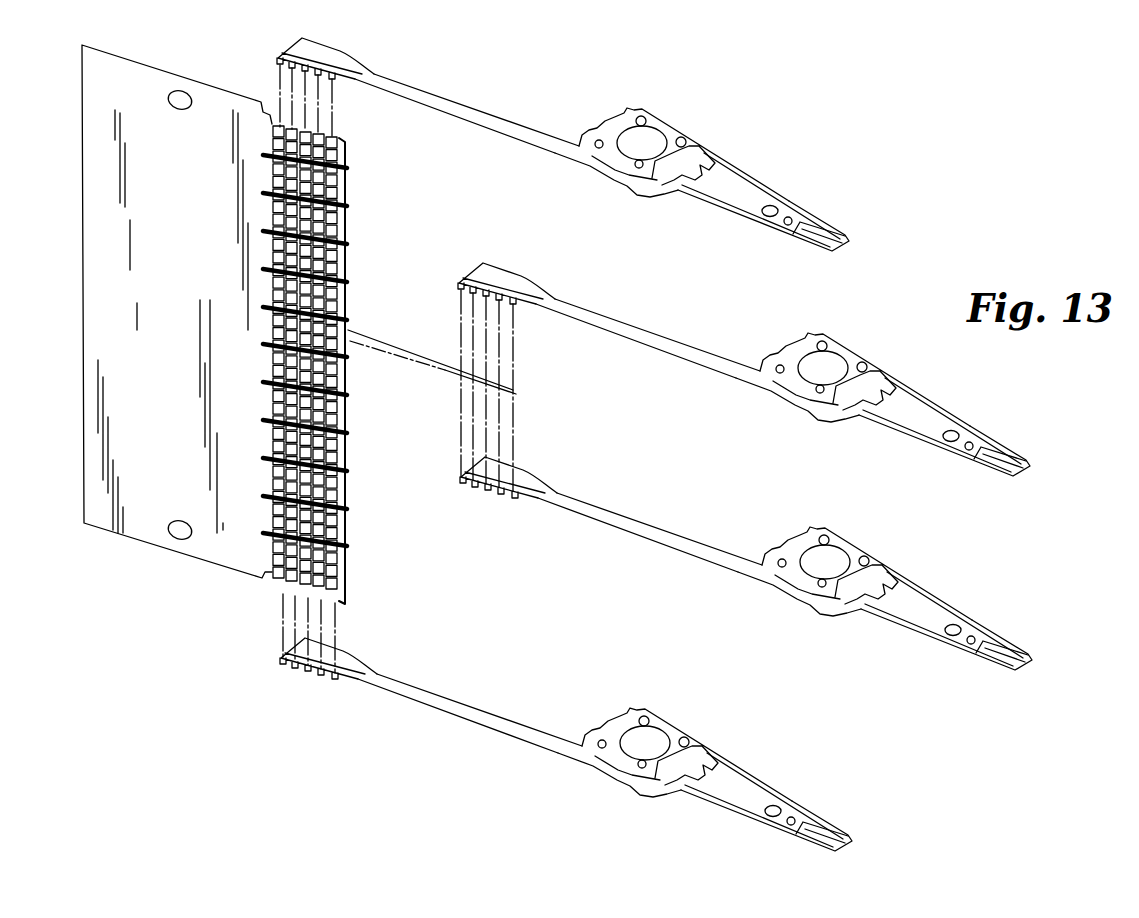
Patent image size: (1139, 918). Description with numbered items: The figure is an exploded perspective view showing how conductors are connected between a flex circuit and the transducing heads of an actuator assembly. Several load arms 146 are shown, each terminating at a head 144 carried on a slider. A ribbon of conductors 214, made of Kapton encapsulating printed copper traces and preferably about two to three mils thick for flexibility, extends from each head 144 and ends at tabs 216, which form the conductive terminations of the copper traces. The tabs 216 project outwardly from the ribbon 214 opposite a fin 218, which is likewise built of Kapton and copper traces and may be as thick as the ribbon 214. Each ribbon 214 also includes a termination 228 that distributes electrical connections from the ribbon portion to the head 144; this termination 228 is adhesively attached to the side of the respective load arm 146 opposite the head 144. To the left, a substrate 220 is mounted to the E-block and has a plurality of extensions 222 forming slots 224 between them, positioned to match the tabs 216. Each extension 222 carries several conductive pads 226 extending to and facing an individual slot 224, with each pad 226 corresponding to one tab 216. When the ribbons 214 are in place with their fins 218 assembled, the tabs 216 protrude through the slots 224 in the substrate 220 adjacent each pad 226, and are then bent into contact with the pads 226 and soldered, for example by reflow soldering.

The head 144 is at (1025, 473).
The load arm 146 is at (661, 123).
The ribbon of conductors 214 is at (477, 113).
The tabs 216 is at (306, 673).
The fin 218 is at (340, 50).
The substrate 220 is at (170, 393).
The extensions 222 is at (343, 152).
The slots 224 is at (345, 215).
The conductive pads 226 is at (347, 398).
The terminations 228 is at (753, 171).